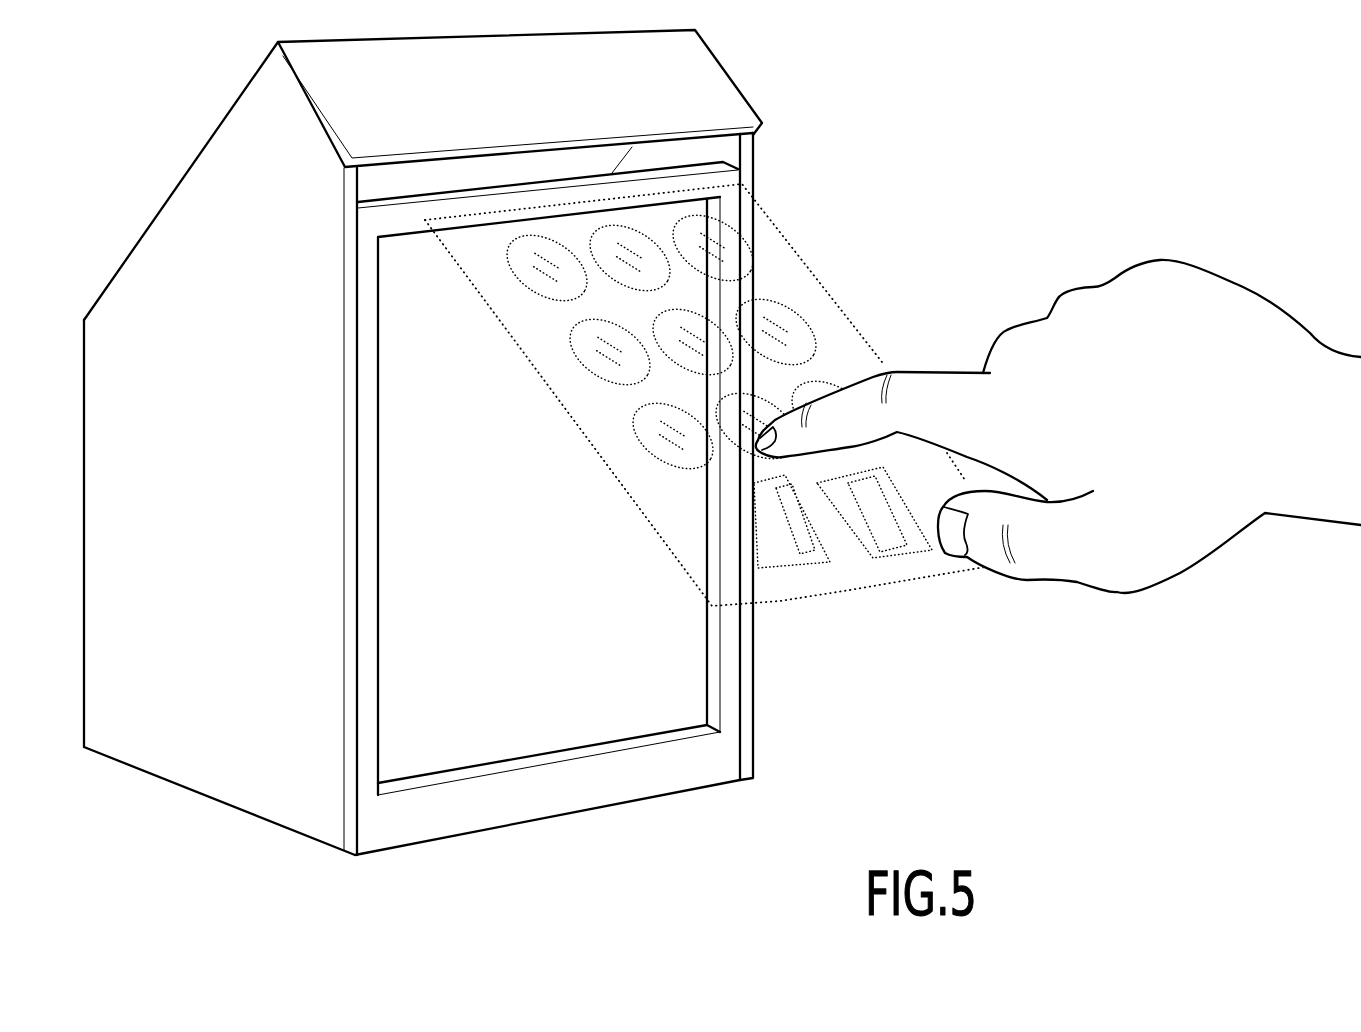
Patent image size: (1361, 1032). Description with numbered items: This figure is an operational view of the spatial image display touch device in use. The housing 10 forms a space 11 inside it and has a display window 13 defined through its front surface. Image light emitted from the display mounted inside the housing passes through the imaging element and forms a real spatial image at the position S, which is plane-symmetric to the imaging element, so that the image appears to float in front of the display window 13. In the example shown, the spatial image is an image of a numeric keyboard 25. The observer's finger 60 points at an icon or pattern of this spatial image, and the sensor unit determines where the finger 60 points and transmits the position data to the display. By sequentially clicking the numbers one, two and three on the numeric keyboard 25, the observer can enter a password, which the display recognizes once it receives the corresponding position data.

The housing 10 is at (151, 214).
The space 11 is at (527, 598).
The display window 13 is at (536, 760).
The numeric keyboard 25 is at (802, 253).
The position S is at (855, 293).
The finger 60 is at (942, 390).